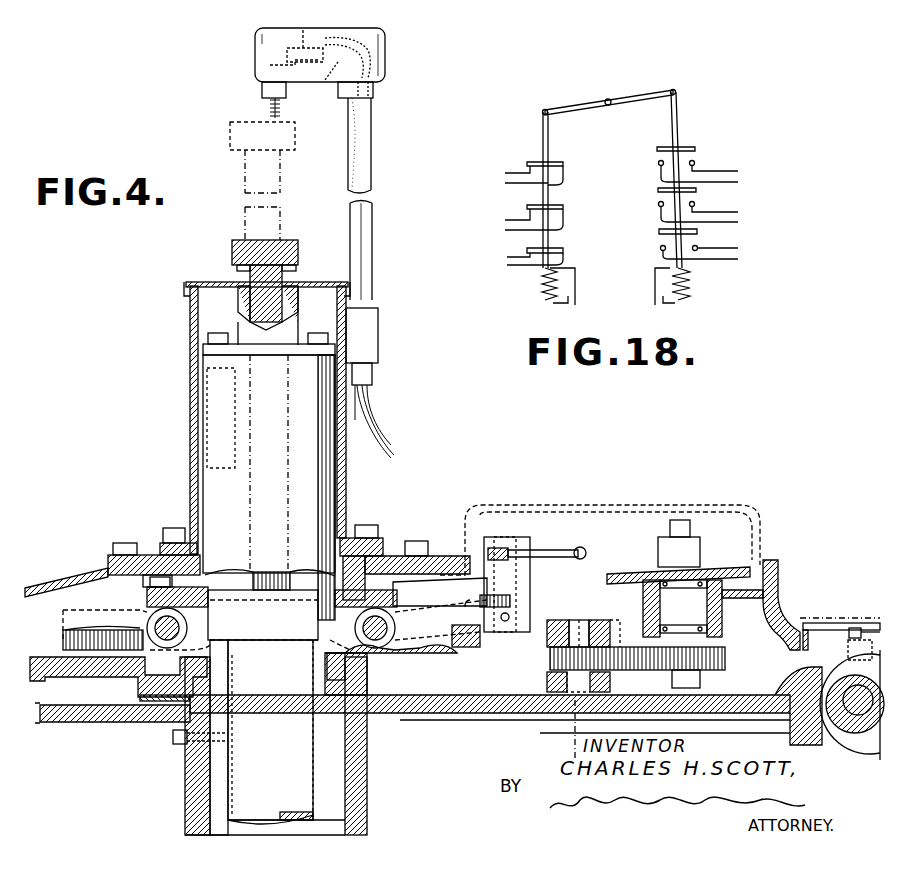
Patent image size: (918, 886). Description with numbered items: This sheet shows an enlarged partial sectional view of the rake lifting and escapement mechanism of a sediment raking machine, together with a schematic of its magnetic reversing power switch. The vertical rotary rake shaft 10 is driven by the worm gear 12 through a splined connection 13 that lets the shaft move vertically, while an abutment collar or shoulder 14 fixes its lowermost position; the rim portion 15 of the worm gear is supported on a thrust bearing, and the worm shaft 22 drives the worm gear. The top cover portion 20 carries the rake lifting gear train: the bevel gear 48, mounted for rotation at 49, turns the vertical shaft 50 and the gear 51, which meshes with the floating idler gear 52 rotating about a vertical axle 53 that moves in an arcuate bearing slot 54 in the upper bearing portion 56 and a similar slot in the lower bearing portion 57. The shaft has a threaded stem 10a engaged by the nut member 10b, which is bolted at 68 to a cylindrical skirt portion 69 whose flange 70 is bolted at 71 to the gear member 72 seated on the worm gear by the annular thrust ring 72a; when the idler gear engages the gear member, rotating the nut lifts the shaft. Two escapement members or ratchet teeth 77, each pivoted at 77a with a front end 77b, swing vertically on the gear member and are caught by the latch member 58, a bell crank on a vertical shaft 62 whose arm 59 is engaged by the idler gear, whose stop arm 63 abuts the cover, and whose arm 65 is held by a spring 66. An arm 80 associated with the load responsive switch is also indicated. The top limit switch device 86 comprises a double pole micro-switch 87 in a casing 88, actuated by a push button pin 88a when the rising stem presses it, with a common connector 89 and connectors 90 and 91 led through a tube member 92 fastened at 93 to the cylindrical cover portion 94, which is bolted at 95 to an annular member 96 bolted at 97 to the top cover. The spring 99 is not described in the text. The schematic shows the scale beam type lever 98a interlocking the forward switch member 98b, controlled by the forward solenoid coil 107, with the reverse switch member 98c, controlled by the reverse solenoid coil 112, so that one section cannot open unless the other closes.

In FIG. 4, the vertical rotary rake shaft 10 is at (265, 737).
In FIG. 4, the threaded stem 10a is at (243, 213).
In FIG. 4, the nut member 10b is at (240, 295).
In FIG. 4, the worm gear 12 is at (100, 723).
In FIG. 4, the splined connection 13 is at (178, 745).
In FIG. 4, the abutment collar or shoulder 14 is at (280, 640).
In FIG. 4, the rim portion 15 is at (800, 690).
In FIG. 4, the top cover portion 20 is at (780, 568).
In FIG. 4, the worm shaft 22 is at (840, 640).
In FIG. 4, the bevel gear 48 is at (718, 567).
In FIG. 4, the mounting of bevel gear 49 is at (640, 572).
In FIG. 4, the vertical shaft 50 is at (660, 603).
In FIG. 4, the gear 51 is at (725, 652).
In FIG. 4, the idler gear 52 is at (664, 683).
In FIG. 4, the vertical axle 53 is at (596, 620).
In FIG. 4, the bearing slot 54 is at (576, 620).
In FIG. 4, the upper bearing portion 56 is at (556, 620).
In FIG. 4, the lower bearing portion 57 is at (545, 690).
In FIG. 4, the latch member 58 is at (475, 618).
In FIG. 4, the arm 59 is at (548, 740).
In FIG. 4, the vertical shaft 62 is at (455, 560).
In FIG. 4, the stop arm 63 is at (500, 548).
In FIG. 4, the arm 65 is at (556, 550).
In FIG. 4, the spring 66 is at (580, 545).
In FIG. 4, the bolt connection 68 is at (206, 338).
In FIG. 4, the cylindrical or skirt portion 69 is at (206, 415).
In FIG. 4, the flange 70 is at (147, 608).
In FIG. 4, the bolt connection 71 is at (143, 583).
In FIG. 4, the gear member 72 is at (47, 655).
In FIG. 4, the annular thrust ring 72a is at (140, 692).
In FIG. 4, the escapement member or ratchet tooth 77 is at (88, 640).
In FIG. 4, the pivot mounting 77a is at (168, 636).
In FIG. 4, the front end 77b is at (212, 625).
In FIG. 4, the arm 80 is at (858, 630).
In FIG. 4, the top limit switch device 86 is at (246, 73).
In FIG. 4, the double pole micro-switch 87 is at (303, 28).
In FIG. 4, the casing 88 is at (256, 44).
In FIG. 4, the push button pin 88a is at (265, 124).
In FIG. 4, the common connector 89 is at (385, 74).
In FIG. 4, the connector 90 is at (338, 62).
In FIG. 4, the connector 91 is at (385, 46).
In FIG. 4, the tube member 92 is at (373, 180).
In FIG. 4, the fastening 93 is at (379, 306).
In FIG. 4, the cylindrical cover portion 94 is at (188, 378).
In FIG. 4, the bolt connection 95 is at (365, 525).
In FIG. 4, the annular member 96 is at (152, 540).
In FIG. 4, the bolt connection 97 is at (112, 546).
In FIG. 4, the spring 99 is at (268, 99).
In FIG. 18, the scale beam type lever 98a is at (640, 88).
In FIG. 18, the forward switch member 98b is at (540, 143).
In FIG. 18, the reverse switch member 98c is at (682, 128).
In FIG. 18, the forward solenoid coil 107 is at (538, 290).
In FIG. 18, the reverse solenoid coil 112 is at (690, 290).